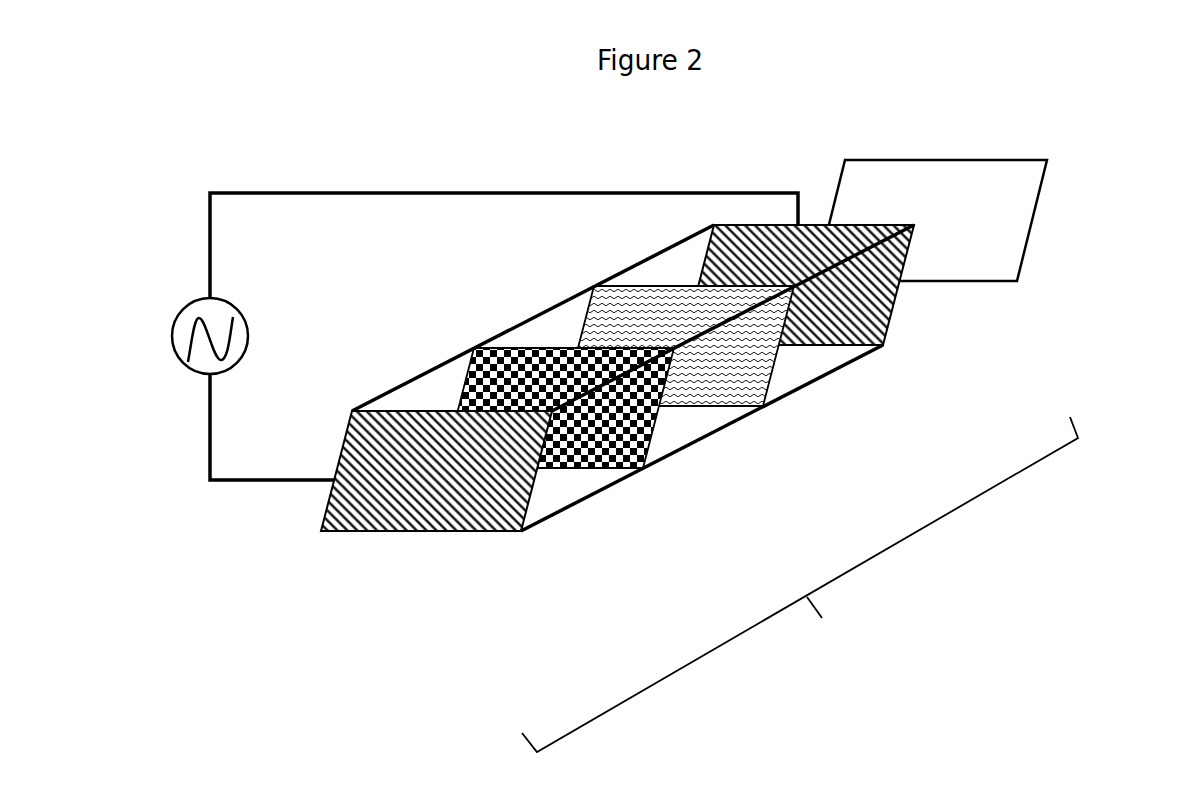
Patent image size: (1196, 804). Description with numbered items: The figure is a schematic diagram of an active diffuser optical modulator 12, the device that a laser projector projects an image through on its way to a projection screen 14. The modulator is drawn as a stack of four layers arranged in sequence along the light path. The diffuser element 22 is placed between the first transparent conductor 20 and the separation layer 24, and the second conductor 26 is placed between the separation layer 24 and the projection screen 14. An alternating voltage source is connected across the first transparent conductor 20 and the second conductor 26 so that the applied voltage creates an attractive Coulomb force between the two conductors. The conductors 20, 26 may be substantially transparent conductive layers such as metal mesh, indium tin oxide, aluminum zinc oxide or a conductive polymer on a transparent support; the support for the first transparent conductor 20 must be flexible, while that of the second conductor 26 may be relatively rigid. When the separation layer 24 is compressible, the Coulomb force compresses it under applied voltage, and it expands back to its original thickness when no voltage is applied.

The active diffuser optical modulator 12 is at (800, 584).
The projection screen 14 is at (1032, 250).
The first transparent conductor 20 is at (342, 543).
The diffuser element 22 is at (583, 474).
The separation layer 24 is at (710, 418).
The second conductor 26 is at (902, 323).